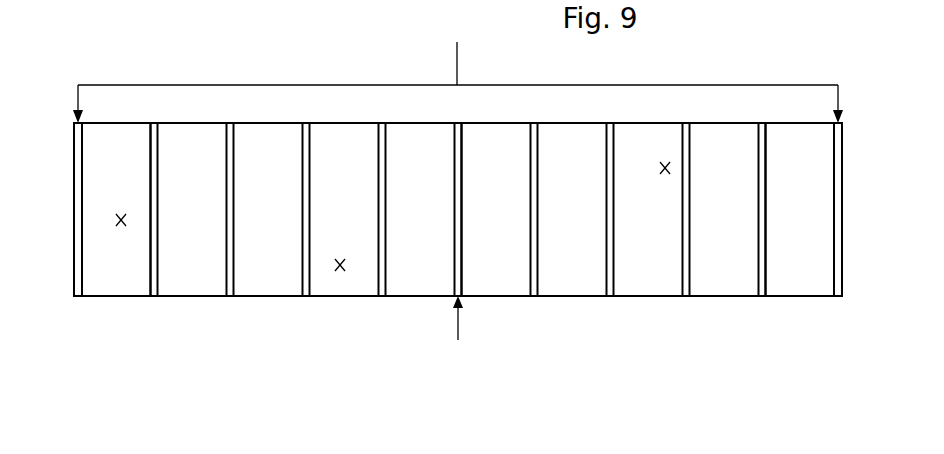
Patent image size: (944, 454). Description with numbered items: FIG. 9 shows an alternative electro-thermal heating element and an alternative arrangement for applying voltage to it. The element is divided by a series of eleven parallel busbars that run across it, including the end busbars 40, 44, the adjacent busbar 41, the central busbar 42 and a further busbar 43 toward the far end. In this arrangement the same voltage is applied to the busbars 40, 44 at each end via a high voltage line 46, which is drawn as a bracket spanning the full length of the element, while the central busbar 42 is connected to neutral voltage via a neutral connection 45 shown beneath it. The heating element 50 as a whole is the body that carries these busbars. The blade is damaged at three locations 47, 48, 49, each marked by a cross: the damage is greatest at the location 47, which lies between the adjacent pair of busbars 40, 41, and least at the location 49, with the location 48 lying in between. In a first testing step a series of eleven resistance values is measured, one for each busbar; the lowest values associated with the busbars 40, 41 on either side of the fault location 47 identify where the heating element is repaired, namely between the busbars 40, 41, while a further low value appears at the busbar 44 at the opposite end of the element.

The busbar 40 is at (83, 279).
The busbar 41 is at (157, 278).
The central busbar 42 is at (457, 270).
The busbar 43 is at (762, 272).
The busbar 44 is at (832, 268).
The neutral connection 45 is at (455, 318).
The high voltage line 46 is at (457, 70).
The damage location 47 is at (122, 213).
The damage location 48 is at (341, 258).
The damage location 49 is at (666, 160).
The wall panel 50 is at (270, 341).